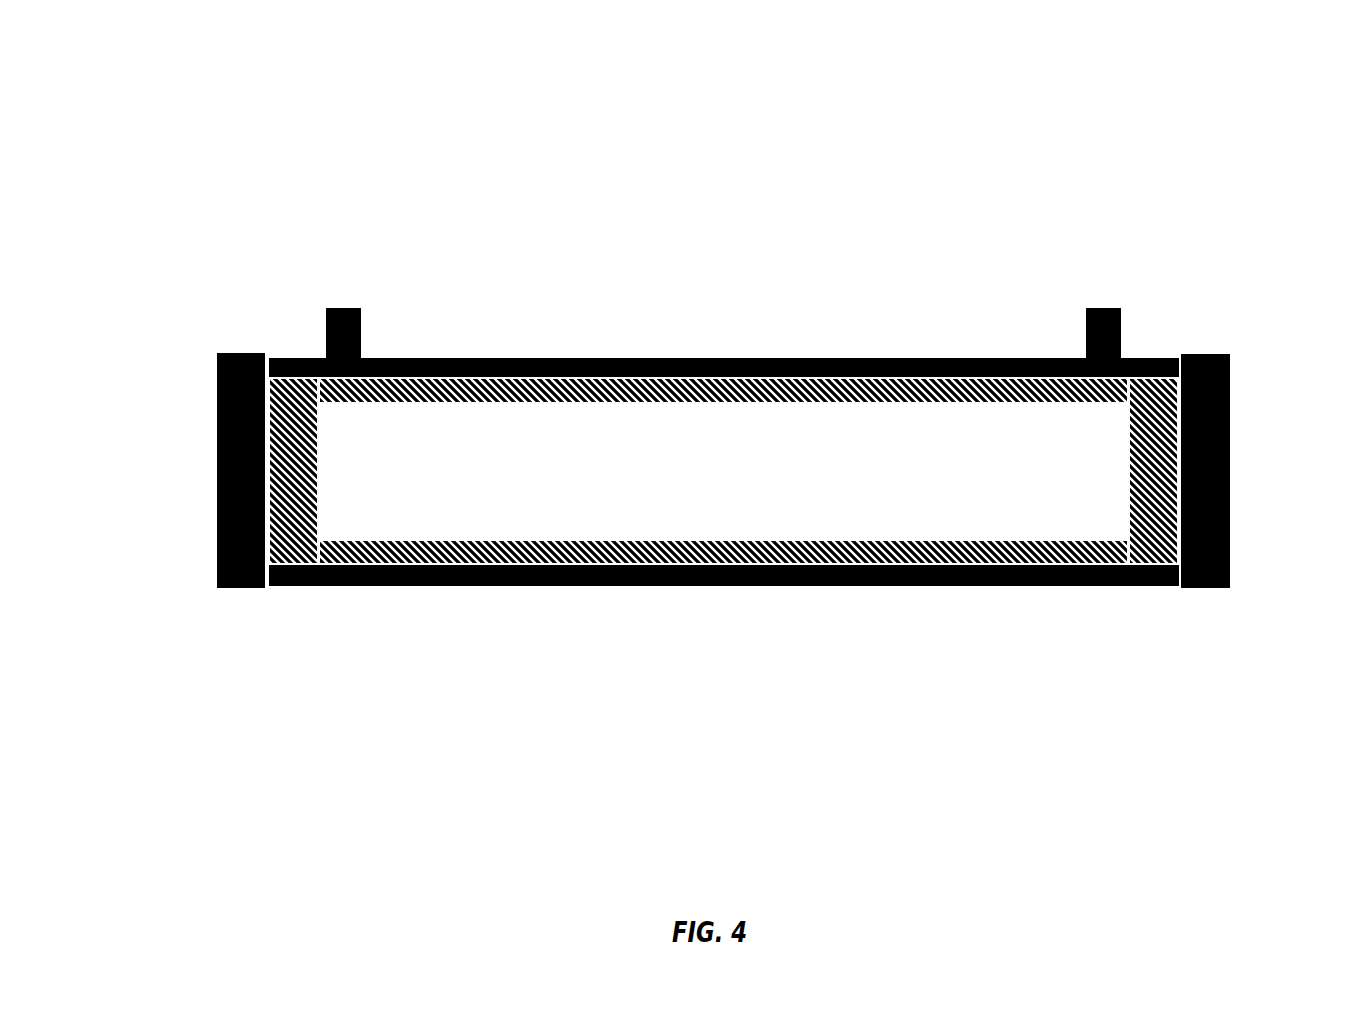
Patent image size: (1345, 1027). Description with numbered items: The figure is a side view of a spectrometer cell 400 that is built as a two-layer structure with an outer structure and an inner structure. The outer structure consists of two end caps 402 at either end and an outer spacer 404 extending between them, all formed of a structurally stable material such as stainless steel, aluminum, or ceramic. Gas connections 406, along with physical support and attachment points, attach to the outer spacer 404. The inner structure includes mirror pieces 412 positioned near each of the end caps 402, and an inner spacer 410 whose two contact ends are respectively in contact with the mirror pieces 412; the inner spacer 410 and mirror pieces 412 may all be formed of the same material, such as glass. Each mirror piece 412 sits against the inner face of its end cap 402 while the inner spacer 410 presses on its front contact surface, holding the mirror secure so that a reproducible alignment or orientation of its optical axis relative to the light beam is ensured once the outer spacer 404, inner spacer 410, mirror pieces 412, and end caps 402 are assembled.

The spectrometer cell 400 is at (208, 103).
The end caps 402 is at (217, 456).
The outer spacer 404 is at (615, 587).
The gas connections 406 is at (326, 315).
The inner spacer 410 is at (913, 542).
The mirror pieces 412 is at (1132, 475).